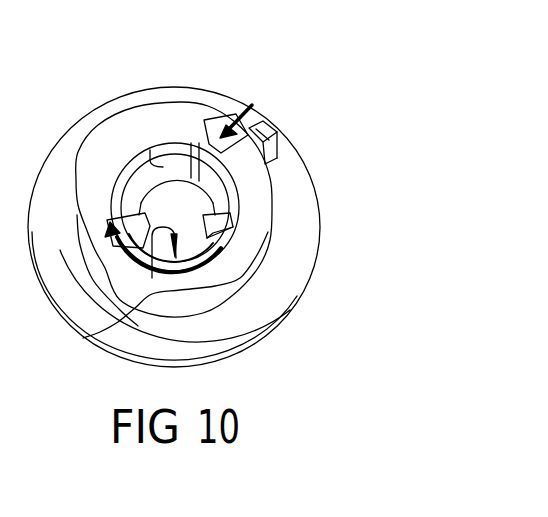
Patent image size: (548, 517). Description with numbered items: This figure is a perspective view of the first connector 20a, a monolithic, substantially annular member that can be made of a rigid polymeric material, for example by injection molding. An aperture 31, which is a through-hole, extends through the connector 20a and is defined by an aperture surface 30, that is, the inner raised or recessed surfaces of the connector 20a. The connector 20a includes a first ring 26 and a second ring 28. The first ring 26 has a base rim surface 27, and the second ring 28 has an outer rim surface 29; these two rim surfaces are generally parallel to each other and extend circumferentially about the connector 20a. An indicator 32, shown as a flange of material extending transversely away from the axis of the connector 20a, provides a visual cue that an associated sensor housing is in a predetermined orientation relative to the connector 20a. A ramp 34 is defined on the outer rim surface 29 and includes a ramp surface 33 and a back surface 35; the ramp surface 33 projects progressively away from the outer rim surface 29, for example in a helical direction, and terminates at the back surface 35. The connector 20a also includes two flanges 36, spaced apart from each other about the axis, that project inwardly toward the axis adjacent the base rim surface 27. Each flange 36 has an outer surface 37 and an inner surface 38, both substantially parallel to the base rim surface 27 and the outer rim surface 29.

The first connector 20a is at (218, 88).
The first ring 26 is at (250, 317).
The base rim surface 27 is at (240, 356).
The second ring 28 is at (257, 193).
The outer rim surface 29 is at (167, 138).
The aperture surface 30 is at (144, 168).
The aperture 31 is at (84, 338).
The indicator 32 is at (282, 129).
The ramp surface 33 is at (263, 120).
The ramp 34 is at (252, 105).
The back surface 35 is at (262, 168).
The flanges 36 is at (126, 210).
The outer surface 37 is at (140, 195).
The inner surface 38 is at (190, 162).